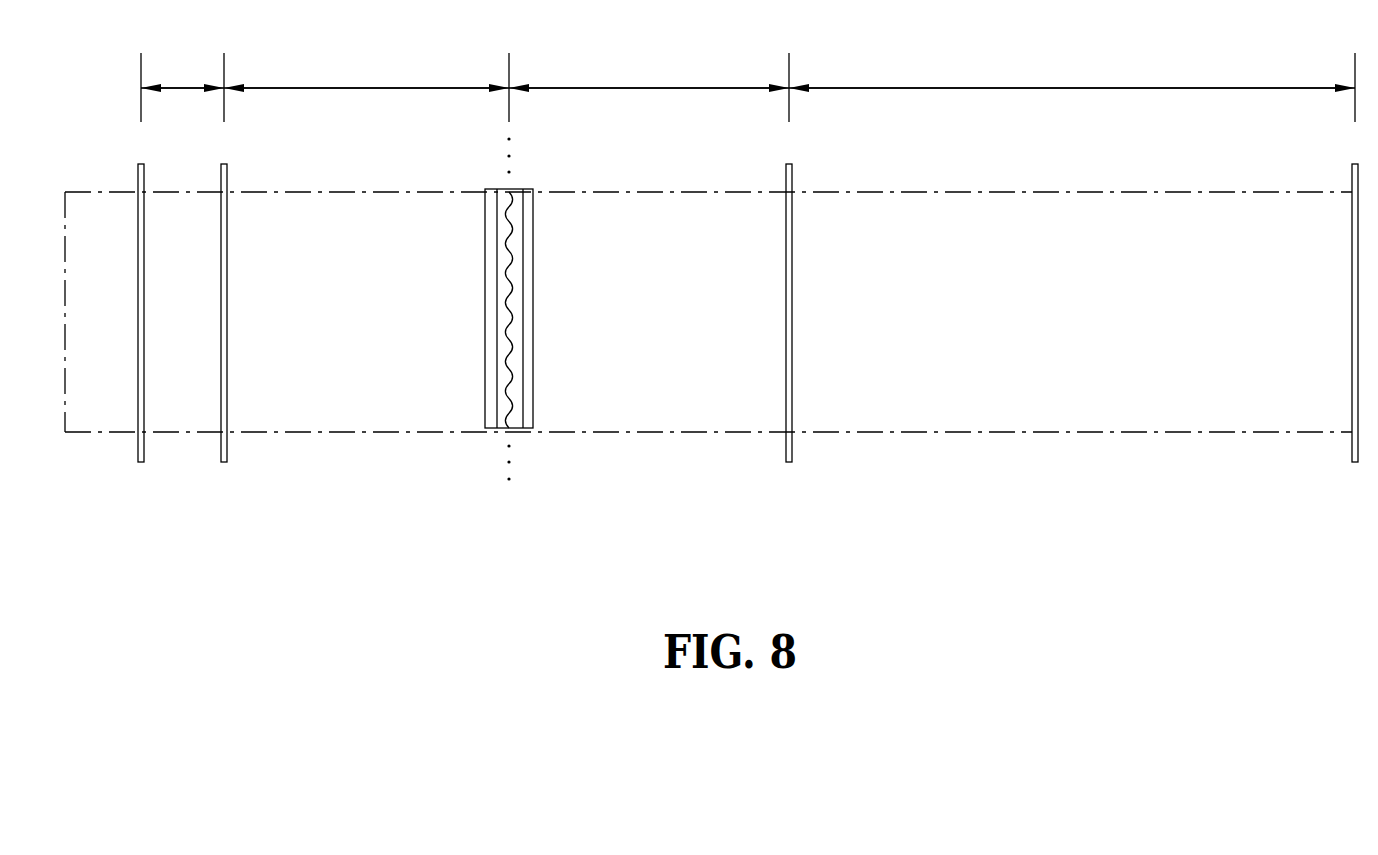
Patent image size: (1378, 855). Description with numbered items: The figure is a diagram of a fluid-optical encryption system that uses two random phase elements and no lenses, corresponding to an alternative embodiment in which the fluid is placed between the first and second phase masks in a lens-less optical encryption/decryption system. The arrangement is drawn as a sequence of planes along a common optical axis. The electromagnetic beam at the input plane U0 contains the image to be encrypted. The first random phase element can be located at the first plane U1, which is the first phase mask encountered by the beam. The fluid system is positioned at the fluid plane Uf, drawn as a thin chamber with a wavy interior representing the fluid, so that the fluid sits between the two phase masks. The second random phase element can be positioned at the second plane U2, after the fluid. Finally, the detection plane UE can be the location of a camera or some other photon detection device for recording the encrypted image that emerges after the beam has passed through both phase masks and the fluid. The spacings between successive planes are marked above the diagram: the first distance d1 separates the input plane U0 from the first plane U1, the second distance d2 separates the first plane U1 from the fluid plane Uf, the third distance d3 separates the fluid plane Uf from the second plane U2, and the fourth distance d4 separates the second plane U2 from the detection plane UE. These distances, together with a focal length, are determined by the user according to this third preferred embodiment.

The input plane U0 is at (140, 345).
The first random phase element plane U1 is at (231, 345).
The fluid system plane Uf is at (509, 332).
The second random phase element plane U2 is at (795, 345).
The detection plane UE is at (1356, 345).
The first distance d1 is at (182, 68).
The second distance d2 is at (366, 68).
The third distance d3 is at (649, 68).
The fourth distance d4 is at (1072, 68).